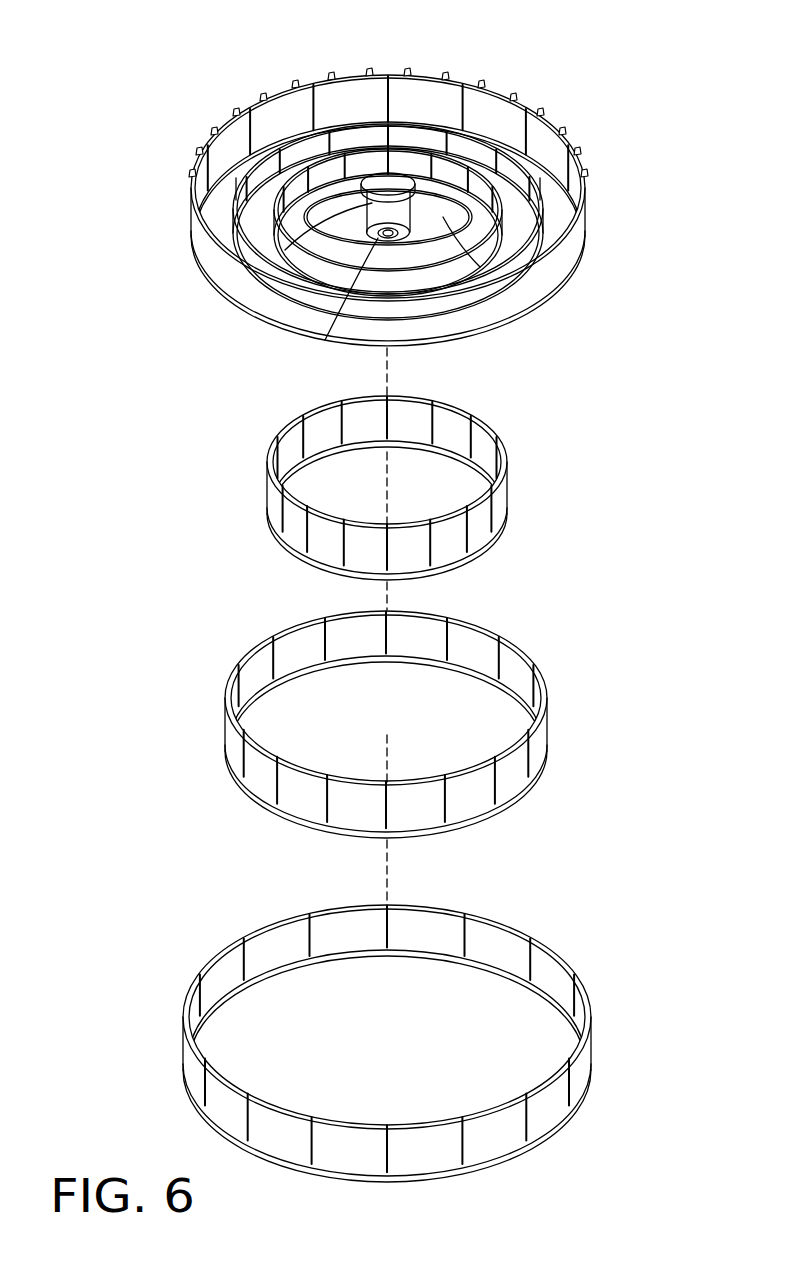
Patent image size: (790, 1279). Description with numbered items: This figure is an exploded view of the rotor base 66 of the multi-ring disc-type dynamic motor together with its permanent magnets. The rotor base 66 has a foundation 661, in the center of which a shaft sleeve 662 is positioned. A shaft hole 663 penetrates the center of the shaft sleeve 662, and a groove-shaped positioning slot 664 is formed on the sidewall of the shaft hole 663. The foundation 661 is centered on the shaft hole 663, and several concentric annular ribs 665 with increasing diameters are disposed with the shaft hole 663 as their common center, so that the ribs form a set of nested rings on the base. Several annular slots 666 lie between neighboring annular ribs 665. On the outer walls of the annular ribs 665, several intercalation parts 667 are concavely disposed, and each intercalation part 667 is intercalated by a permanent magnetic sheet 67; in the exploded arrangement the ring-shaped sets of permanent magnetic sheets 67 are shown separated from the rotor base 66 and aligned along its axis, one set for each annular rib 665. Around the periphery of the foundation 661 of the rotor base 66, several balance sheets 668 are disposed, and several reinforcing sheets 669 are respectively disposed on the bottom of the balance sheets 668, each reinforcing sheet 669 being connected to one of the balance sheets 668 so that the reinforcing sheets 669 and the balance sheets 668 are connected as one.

The rotor base 66 is at (428, 58).
The foundation 661 is at (545, 278).
The shaft sleeve 662 is at (292, 257).
The shaft hole 663 is at (396, 243).
The positioning slot 664 is at (325, 340).
The annular ribs 665 is at (560, 248).
The annular slots 666 is at (212, 248).
The intercalation parts 667 is at (543, 143).
The balance sheets 668 is at (249, 104).
The reinforcing sheets 669 is at (247, 101).
The permanent magnetic sheet 67 is at (268, 473).